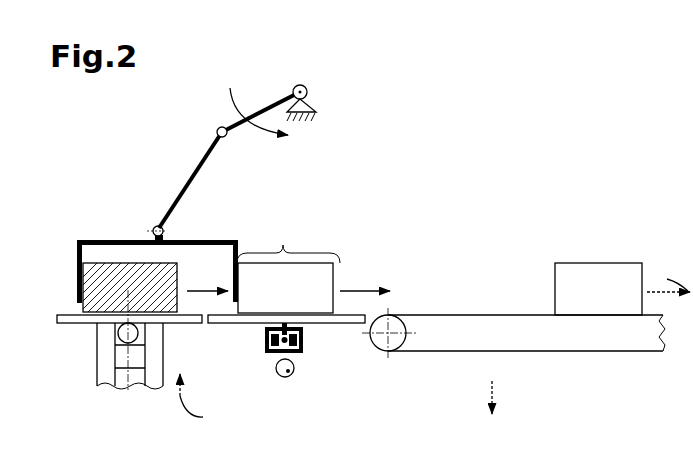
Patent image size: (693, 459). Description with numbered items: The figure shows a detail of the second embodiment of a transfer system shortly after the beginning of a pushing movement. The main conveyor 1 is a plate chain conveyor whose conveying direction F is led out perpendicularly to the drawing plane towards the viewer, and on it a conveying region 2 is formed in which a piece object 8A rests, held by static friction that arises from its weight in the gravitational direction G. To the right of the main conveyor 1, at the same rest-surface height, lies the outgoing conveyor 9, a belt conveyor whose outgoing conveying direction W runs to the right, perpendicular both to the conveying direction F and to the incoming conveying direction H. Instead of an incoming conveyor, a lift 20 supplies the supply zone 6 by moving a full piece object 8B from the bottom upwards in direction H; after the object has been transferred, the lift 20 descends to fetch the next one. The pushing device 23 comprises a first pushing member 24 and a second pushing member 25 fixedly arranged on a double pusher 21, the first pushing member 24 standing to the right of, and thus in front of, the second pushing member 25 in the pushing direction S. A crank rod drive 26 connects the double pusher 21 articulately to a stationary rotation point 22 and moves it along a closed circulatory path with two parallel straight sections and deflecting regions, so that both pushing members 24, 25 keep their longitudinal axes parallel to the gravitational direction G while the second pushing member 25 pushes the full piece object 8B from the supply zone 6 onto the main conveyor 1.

The main conveyor 1 is at (257, 362).
The conveying region 2 is at (283, 245).
The supply zone 6 is at (177, 232).
The piece object 8A is at (323, 282).
The full piece object 8B is at (159, 304).
The outgoing conveyor 9 is at (425, 364).
The lift 20 is at (92, 341).
The double pusher 21 is at (200, 236).
The stationary rotation point 22 is at (304, 86).
The pushing device 23 is at (348, 138).
The first pushing member 24 is at (240, 243).
The second pushing member 25 is at (77, 243).
The crank rod drive 26 is at (184, 117).
The pushing direction S is at (207, 283).
The incoming conveying direction H is at (199, 401).
The conveying direction F is at (292, 377).
The gravitational direction G is at (492, 387).
The outgoing conveying direction W is at (668, 283).